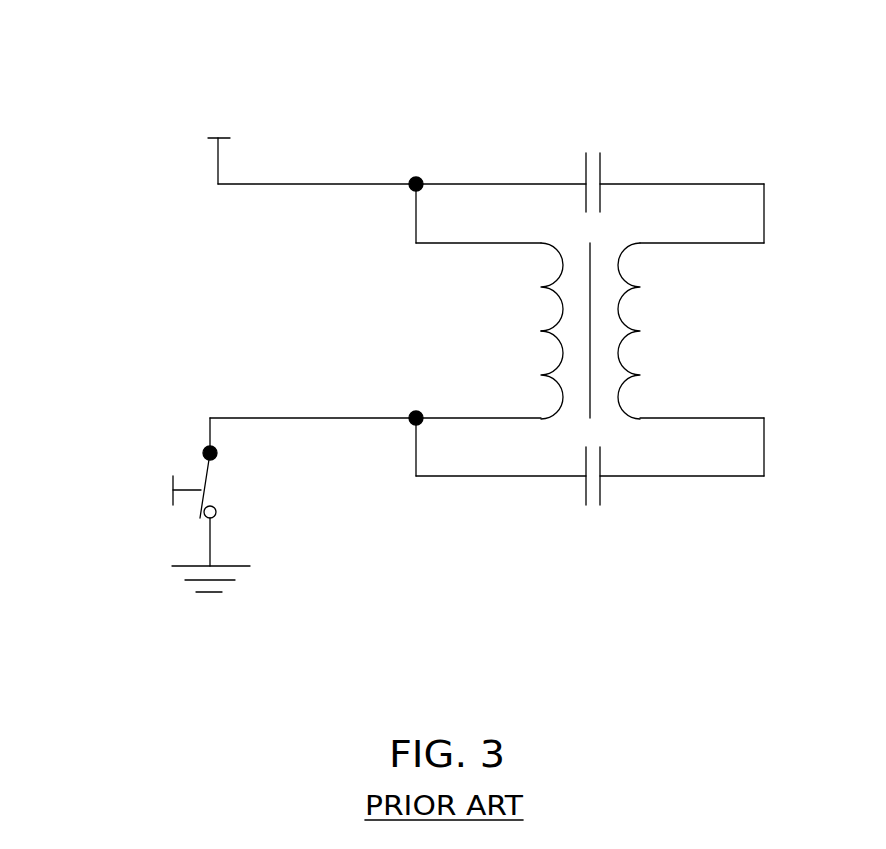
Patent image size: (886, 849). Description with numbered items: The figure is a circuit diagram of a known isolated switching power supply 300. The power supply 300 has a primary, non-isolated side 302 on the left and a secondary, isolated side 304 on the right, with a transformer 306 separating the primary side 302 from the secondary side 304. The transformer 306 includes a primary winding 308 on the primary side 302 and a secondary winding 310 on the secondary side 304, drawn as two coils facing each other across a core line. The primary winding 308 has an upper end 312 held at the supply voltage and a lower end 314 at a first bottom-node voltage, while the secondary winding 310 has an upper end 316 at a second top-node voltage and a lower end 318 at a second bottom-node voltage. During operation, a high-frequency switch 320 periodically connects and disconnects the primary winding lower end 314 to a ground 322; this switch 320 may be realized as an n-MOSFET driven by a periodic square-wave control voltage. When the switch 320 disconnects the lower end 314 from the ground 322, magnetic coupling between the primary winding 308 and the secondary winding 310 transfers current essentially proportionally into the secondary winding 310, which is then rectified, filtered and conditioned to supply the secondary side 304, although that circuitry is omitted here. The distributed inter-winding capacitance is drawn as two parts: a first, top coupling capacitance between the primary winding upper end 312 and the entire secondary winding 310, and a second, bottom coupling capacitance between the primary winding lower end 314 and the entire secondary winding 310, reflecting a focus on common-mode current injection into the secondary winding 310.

The isolated switching power supply 300 is at (366, 66).
The primary, non-isolated side 302 is at (346, 329).
The secondary, isolated side 304 is at (725, 329).
The transformer 306 is at (548, 327).
The primary winding 308 is at (548, 282).
The secondary winding 310 is at (635, 283).
The upper end 312 is at (437, 243).
The lower end 314 is at (445, 418).
The upper end 316 is at (663, 243).
The lower end 318 is at (660, 418).
The high-frequency switch 320 is at (204, 468).
The ground 322 is at (232, 566).